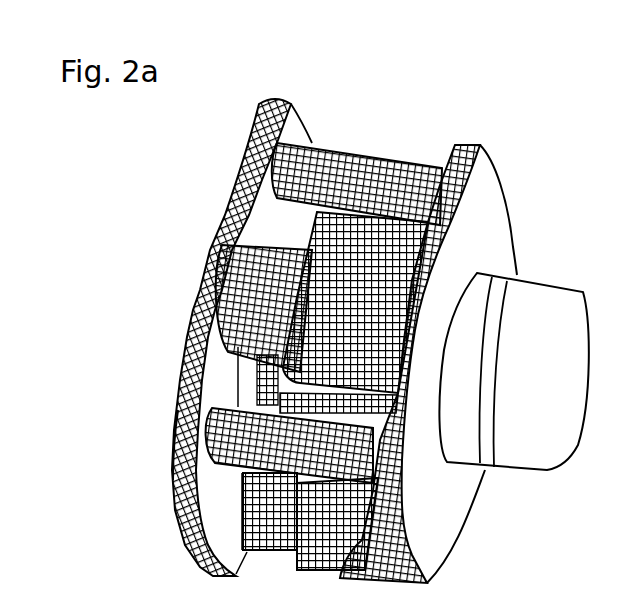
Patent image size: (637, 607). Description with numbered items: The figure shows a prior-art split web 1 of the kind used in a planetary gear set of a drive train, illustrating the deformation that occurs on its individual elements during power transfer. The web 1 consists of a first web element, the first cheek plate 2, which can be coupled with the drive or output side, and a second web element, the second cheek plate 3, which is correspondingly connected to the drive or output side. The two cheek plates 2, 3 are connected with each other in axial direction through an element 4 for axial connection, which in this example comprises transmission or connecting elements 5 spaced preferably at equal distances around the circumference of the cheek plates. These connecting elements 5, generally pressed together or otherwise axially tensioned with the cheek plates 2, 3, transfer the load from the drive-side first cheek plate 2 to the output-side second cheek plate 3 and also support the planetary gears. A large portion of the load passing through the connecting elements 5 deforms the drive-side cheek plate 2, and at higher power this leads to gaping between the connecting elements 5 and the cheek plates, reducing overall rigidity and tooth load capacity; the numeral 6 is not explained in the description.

The web 1 is at (422, 108).
The first cheek plate 2 is at (195, 310).
The second cheek plate 3 is at (480, 145).
The element for axial connection 4 is at (168, 454).
The transmission or connecting elements 5 is at (343, 148).
The connecting pin 6 is at (216, 258).